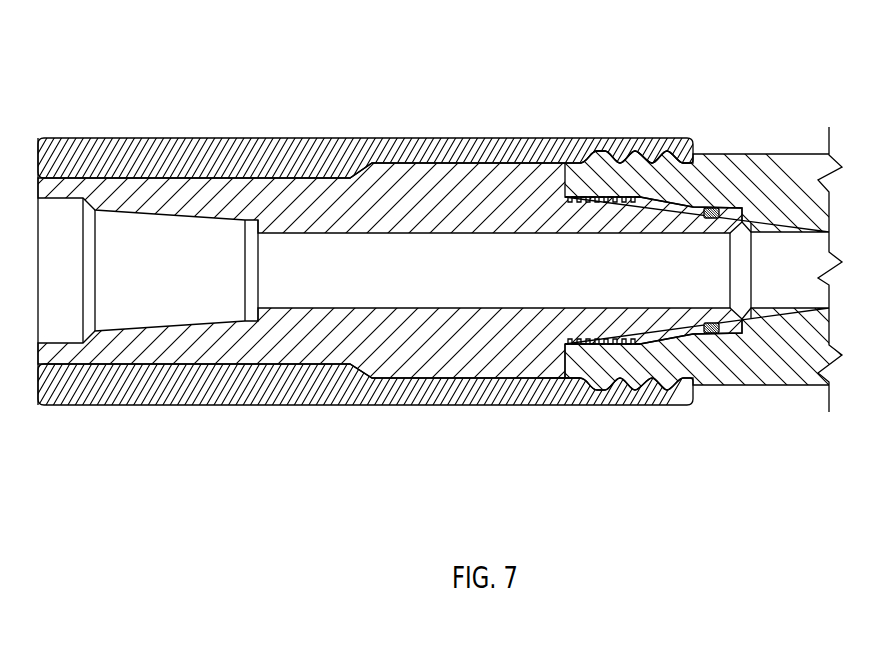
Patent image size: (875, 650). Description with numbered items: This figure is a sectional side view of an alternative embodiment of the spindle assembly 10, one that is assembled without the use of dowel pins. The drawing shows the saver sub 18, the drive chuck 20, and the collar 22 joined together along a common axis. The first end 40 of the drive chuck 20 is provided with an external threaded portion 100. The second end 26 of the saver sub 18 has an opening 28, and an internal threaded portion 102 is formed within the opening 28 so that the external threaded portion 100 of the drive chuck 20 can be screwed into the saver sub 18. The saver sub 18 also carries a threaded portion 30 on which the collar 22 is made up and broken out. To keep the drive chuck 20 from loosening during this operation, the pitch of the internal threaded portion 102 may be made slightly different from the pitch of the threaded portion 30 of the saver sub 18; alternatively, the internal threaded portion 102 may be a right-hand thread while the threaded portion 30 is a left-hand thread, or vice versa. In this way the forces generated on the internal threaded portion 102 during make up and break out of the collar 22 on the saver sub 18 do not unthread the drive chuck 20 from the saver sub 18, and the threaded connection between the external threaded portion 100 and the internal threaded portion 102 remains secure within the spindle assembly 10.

The spindle assembly 10 is at (213, 55).
The saver sub 18 is at (740, 368).
The drive chuck 20 is at (410, 190).
The collar 22 is at (492, 145).
The second end 26 is at (570, 345).
The opening 28 is at (562, 377).
The threaded portion 30 is at (598, 153).
The first end 40 is at (693, 220).
The external threaded portion 100 is at (615, 195).
The internal threaded portion 102 is at (618, 340).